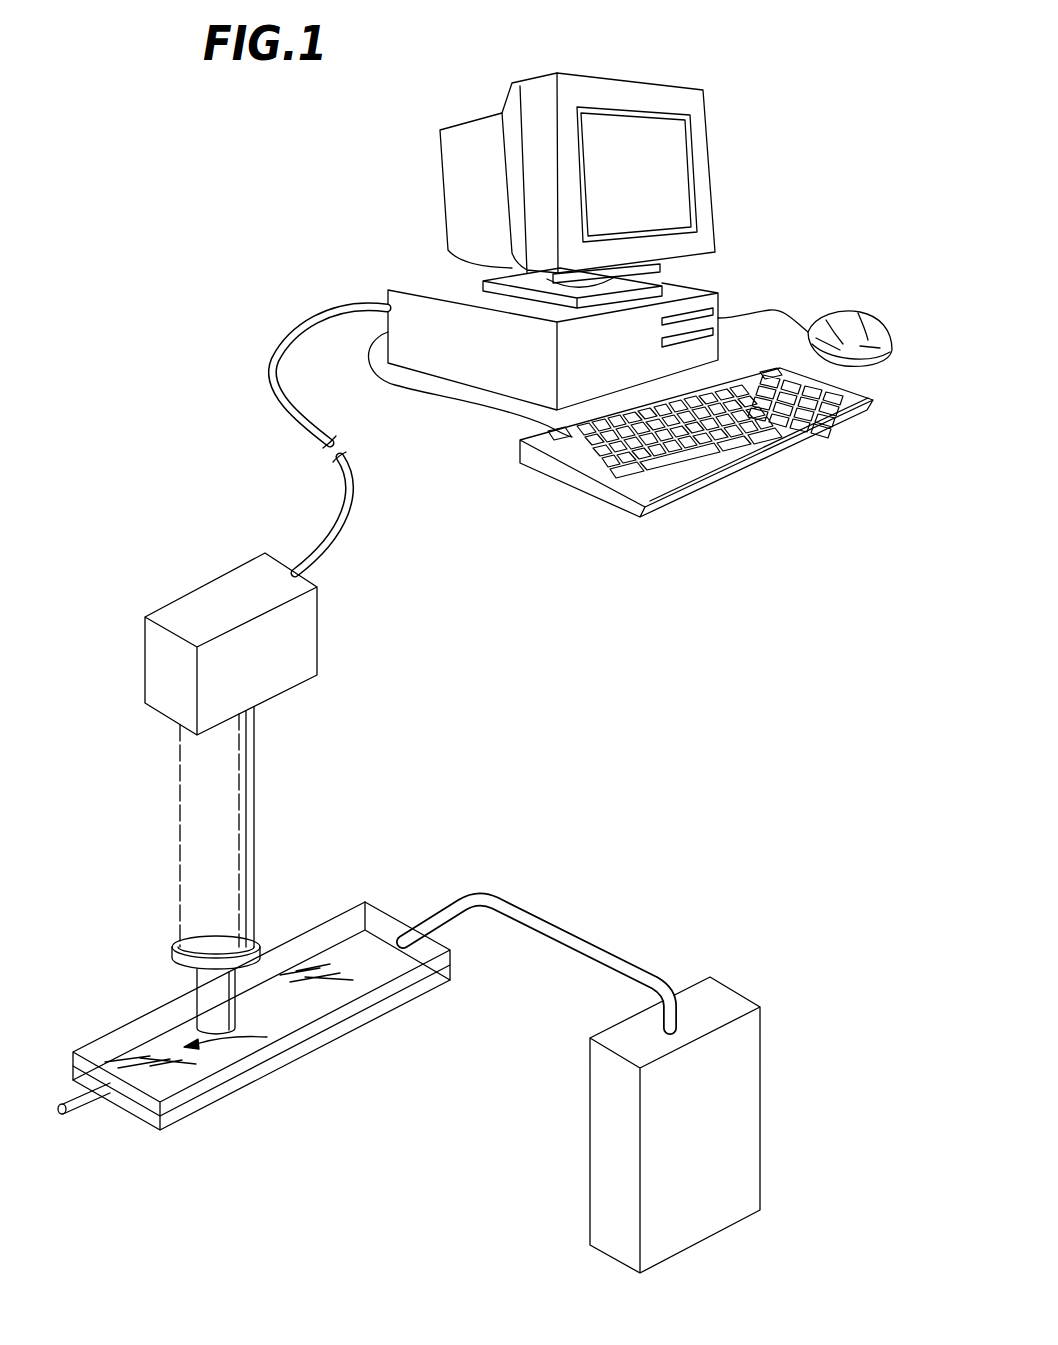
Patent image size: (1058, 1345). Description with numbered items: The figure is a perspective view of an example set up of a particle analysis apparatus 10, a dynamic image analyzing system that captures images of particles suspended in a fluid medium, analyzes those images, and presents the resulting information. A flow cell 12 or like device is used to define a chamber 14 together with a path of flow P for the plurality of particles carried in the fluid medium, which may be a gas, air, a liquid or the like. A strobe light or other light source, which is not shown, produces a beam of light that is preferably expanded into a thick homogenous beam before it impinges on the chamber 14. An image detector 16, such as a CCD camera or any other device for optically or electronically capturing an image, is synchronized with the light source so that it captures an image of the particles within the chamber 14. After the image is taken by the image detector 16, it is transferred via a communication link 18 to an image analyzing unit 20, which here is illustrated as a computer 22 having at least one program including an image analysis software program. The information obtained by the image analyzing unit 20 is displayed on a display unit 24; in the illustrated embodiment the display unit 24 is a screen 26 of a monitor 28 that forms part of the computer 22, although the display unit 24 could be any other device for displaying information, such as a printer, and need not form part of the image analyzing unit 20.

The particle analysis apparatus 10 is at (487, 709).
The flow cell 12 is at (368, 1023).
The chamber 14 is at (267, 1037).
The image detector 16 is at (245, 812).
The communication link 18 is at (348, 510).
The image analyzing unit 20 is at (403, 219).
The computer 22 is at (417, 287).
The display unit 24 is at (590, 178).
The screen 26 is at (680, 207).
The monitor 28 is at (705, 143).
The path of flow P is at (252, 1018).